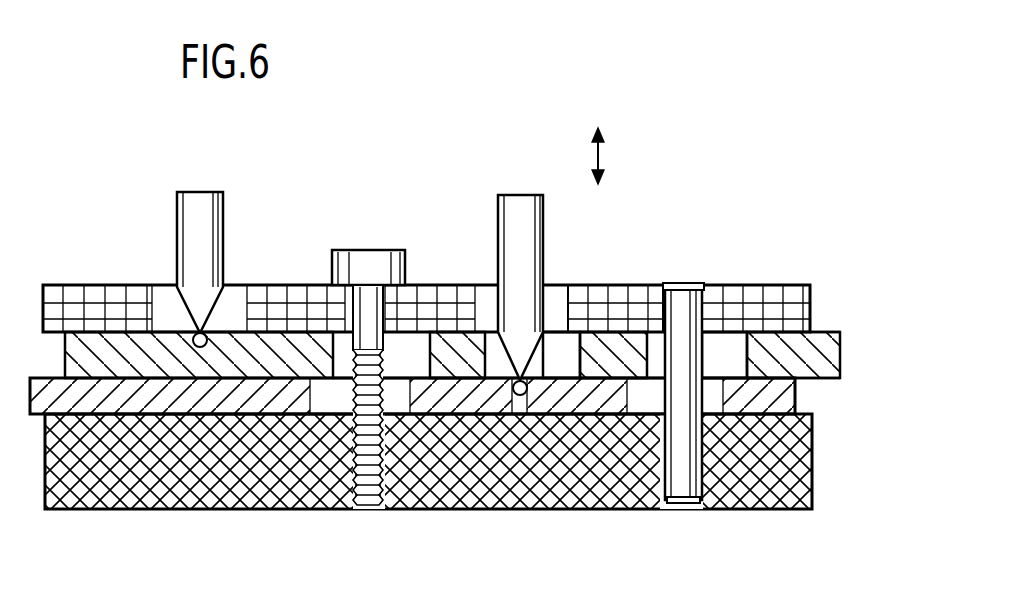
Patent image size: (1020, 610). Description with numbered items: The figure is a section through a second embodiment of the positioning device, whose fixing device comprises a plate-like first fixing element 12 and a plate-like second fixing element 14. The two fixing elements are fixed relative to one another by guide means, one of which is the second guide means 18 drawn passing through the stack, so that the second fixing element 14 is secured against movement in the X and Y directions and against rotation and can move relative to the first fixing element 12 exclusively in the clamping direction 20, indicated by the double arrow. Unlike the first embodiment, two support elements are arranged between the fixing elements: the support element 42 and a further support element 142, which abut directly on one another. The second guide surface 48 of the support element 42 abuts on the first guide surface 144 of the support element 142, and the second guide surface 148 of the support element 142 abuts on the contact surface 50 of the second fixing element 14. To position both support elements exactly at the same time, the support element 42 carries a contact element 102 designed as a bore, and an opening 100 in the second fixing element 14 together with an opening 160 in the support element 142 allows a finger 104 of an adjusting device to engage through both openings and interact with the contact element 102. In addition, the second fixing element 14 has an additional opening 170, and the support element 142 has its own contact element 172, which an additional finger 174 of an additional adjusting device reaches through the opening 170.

The first fixing element 12 is at (776, 488).
The second fixing element 14 is at (816, 283).
The second guide means 18 is at (686, 303).
The clamping direction 20 is at (605, 152).
The support element 42 is at (806, 397).
The second guide surface 48 is at (437, 373).
The contact surface 50 is at (618, 342).
The opening 100 is at (562, 290).
The contact element 102 is at (520, 395).
The finger 104 is at (522, 256).
The support element 142 is at (846, 340).
The first guide surface 144 is at (447, 392).
The second guide surface 148 is at (757, 332).
The opening 160 is at (578, 360).
The additional opening 170 is at (240, 300).
The contact element 172 is at (197, 347).
The additional finger 174 is at (186, 233).